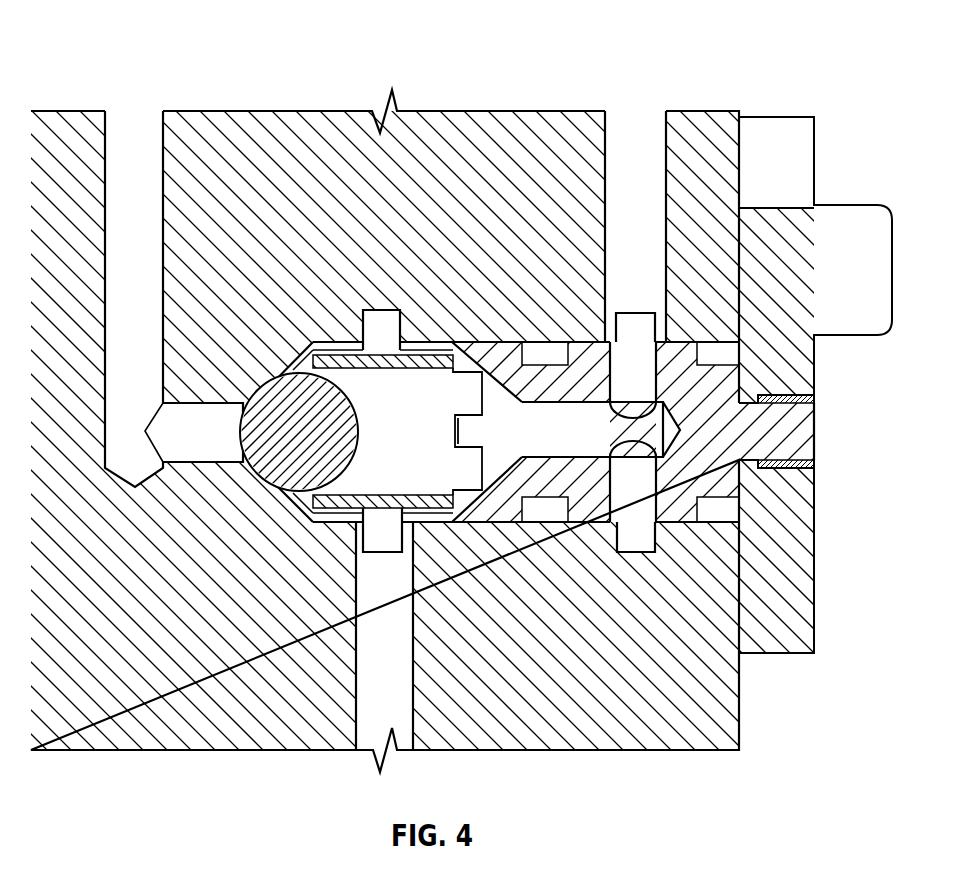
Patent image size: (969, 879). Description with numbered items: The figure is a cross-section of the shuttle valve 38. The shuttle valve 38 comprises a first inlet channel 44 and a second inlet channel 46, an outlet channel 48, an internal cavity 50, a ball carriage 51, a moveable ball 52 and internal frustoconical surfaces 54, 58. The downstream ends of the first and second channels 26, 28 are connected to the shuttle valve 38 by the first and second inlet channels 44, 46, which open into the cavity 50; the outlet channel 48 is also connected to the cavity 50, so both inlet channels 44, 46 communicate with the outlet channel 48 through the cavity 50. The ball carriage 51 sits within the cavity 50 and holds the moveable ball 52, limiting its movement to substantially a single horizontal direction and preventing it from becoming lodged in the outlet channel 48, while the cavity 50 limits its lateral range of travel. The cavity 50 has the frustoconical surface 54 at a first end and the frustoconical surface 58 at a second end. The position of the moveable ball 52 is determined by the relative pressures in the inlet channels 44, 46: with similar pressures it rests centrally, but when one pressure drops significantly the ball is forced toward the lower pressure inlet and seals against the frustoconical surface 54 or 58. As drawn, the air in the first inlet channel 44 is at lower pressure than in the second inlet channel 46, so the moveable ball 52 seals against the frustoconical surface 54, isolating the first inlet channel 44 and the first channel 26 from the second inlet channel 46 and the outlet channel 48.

The first channel 26 is at (137, 126).
The second channel 28 is at (616, 196).
The shuttle valve 38 is at (773, 54).
The first inlet channel 44 is at (172, 448).
The second inlet channel 46 is at (564, 448).
The outlet channel 48 is at (367, 611).
The internal cavity 50 is at (377, 419).
The ball carriage 51 is at (397, 490).
The moveable ball 52 is at (281, 442).
The frustoconical surface 54 is at (284, 489).
The frustoconical surface 58 is at (489, 526).